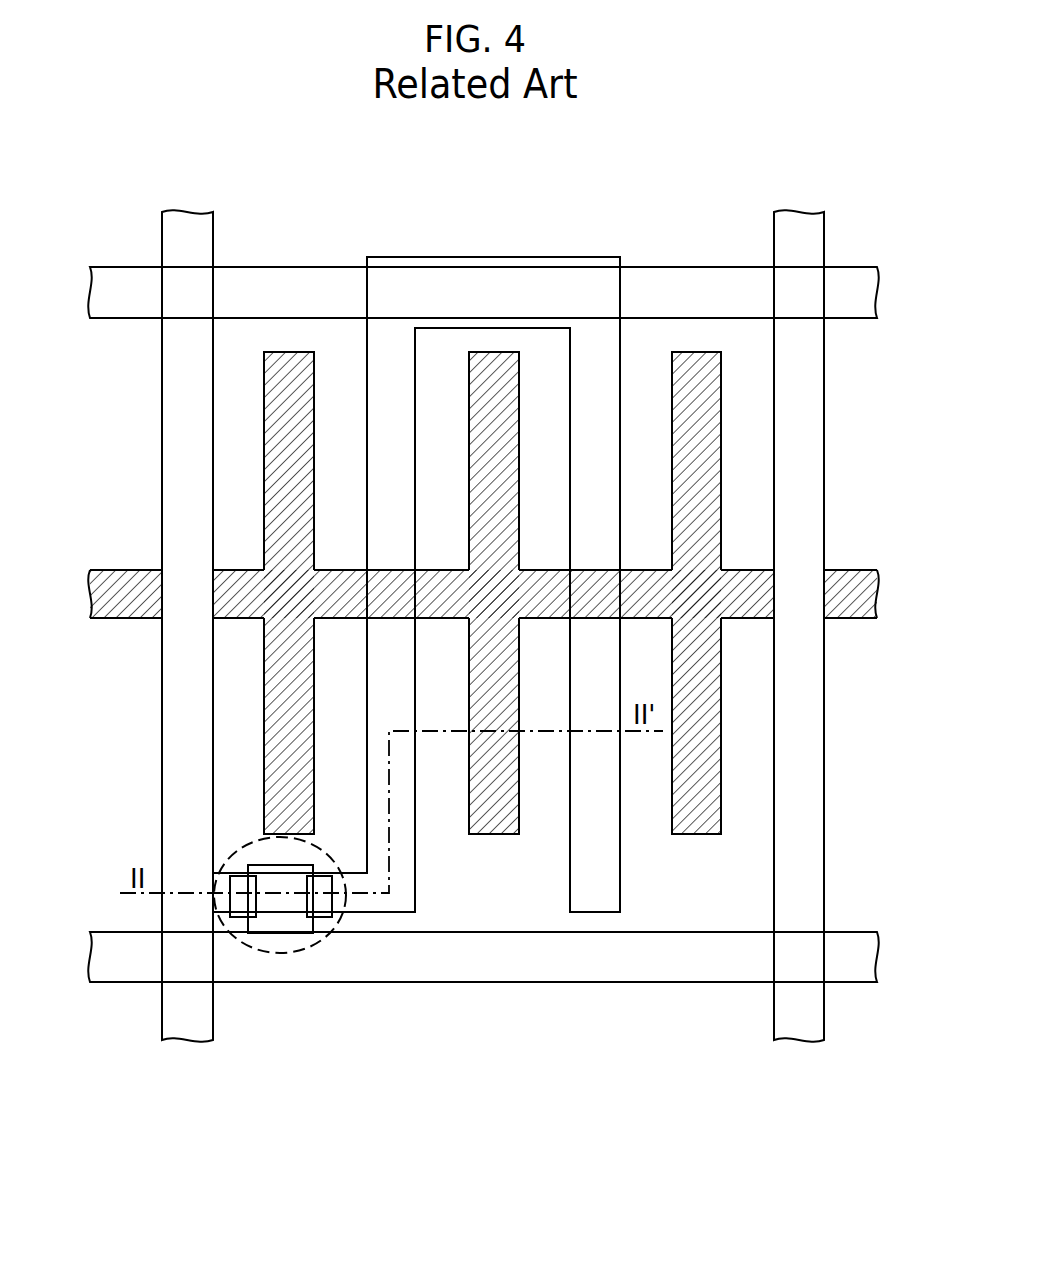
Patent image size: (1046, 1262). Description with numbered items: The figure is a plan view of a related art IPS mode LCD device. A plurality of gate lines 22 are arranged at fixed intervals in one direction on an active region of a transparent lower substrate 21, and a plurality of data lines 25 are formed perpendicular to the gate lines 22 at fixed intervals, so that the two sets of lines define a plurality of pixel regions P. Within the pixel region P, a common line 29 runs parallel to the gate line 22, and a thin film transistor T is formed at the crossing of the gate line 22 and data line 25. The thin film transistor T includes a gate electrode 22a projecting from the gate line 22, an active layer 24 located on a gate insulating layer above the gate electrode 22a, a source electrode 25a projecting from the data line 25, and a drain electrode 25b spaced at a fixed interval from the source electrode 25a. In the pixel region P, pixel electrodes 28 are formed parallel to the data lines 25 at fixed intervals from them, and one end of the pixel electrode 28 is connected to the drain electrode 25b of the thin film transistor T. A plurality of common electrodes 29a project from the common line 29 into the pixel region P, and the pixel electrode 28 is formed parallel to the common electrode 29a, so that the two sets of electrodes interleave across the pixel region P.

The transparent lower substrate 21 is at (627, 1020).
The gate line 22 is at (683, 285).
The gate electrode 22a is at (298, 868).
The active layer 24 is at (280, 914).
The data line 25 is at (175, 788).
The source electrode 25a is at (224, 908).
The drain electrode 25b is at (325, 905).
The pixel electrode 28 is at (378, 348).
The common line 29 is at (862, 592).
The common electrode 29a is at (710, 808).
The pixel region P is at (748, 430).
The thin film transistor T is at (245, 852).